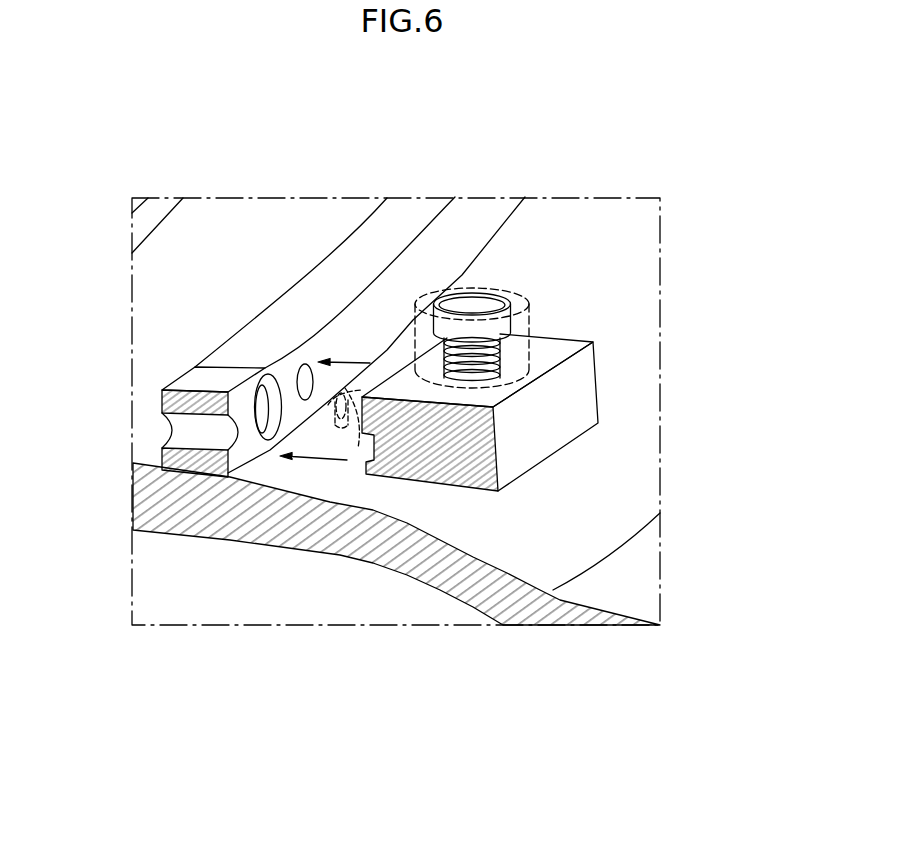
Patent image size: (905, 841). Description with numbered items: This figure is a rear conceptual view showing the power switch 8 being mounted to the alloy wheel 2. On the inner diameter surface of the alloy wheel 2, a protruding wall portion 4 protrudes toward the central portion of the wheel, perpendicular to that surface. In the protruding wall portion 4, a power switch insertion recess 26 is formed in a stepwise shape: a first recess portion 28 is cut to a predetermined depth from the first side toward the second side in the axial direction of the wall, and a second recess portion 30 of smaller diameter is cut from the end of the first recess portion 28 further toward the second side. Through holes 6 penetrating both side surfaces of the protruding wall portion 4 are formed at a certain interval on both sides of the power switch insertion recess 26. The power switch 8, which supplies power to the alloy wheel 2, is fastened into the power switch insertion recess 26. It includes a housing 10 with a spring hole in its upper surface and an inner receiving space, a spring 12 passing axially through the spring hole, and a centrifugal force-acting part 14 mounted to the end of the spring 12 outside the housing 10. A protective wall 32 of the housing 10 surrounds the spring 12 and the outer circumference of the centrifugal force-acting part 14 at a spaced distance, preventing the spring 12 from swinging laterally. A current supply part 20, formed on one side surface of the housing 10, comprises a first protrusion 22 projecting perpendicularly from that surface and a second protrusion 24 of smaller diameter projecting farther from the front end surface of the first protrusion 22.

The alloy wheel 2 is at (605, 278).
The protruding wall portion 4 is at (375, 243).
The through holes 6 is at (303, 380).
The power switch 8 is at (600, 374).
The housing 10 is at (570, 388).
The spring 12 is at (477, 370).
The centrifugal force-acting part 14 is at (492, 307).
The current supply part 20 is at (320, 752).
The first protrusion 22 is at (356, 445).
The second protrusion 24 is at (343, 400).
The power switch insertion recess 26 is at (77, 650).
The first recess portion 28 is at (262, 385).
The second recess portion 30 is at (257, 403).
The protective wall 32 is at (530, 353).